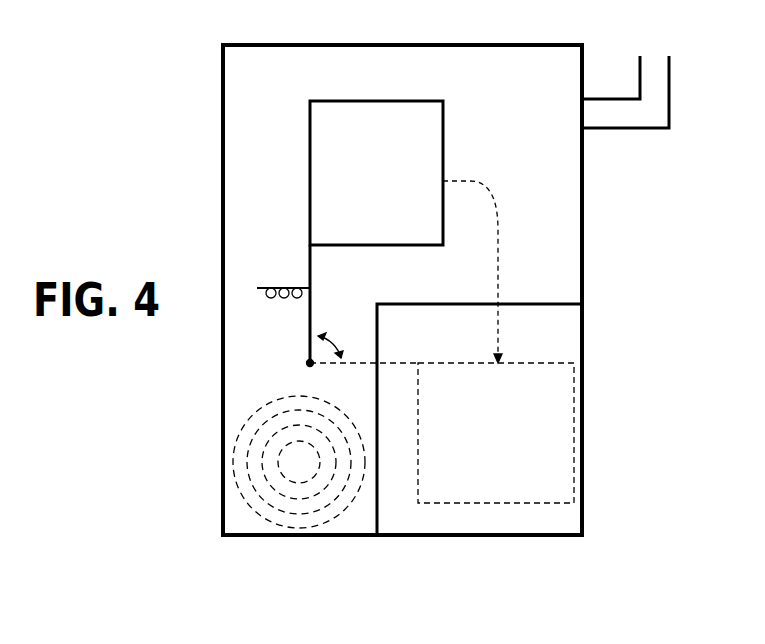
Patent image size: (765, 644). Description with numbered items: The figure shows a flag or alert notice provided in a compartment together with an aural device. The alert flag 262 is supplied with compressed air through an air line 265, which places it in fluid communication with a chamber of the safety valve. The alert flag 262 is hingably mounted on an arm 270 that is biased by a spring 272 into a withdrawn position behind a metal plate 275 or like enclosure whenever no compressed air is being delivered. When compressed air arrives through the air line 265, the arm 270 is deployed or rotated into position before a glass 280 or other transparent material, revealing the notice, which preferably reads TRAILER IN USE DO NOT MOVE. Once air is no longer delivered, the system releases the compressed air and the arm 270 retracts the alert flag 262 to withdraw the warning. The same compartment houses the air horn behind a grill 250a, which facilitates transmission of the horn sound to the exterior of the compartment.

The grill 250a is at (284, 493).
The alert flag 262 is at (376, 173).
The air line 265 is at (612, 128).
The arm 270 is at (310, 311).
The spring 272 is at (281, 288).
The metal plate 275 is at (248, 388).
The glass 280 is at (563, 332).